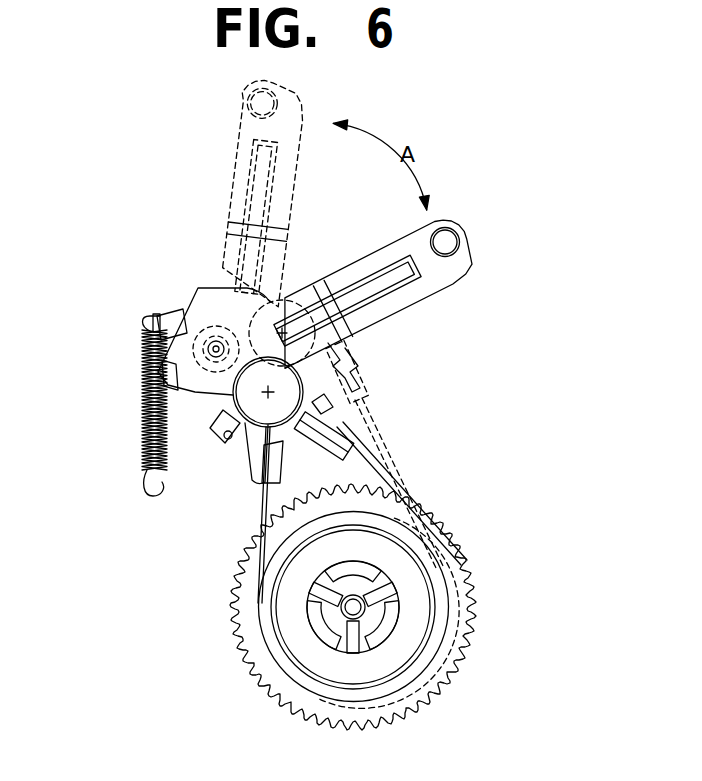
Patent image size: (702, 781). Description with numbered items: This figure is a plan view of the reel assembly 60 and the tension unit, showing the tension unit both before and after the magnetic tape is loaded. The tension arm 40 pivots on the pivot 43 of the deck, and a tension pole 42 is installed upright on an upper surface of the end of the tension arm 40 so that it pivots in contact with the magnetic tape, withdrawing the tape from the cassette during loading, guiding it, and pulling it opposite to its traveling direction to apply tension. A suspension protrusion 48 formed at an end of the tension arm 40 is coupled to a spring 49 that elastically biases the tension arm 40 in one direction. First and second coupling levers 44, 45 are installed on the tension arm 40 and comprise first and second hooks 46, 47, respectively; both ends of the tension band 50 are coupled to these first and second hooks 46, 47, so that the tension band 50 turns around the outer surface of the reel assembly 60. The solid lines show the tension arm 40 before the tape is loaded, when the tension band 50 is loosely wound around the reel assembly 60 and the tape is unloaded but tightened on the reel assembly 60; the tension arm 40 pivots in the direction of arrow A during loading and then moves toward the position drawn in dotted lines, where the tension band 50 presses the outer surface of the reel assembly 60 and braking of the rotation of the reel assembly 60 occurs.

The tension arm 40 is at (366, 258).
The tension pole 42 is at (445, 238).
The pivot 43 is at (214, 352).
The first coupling lever 44 is at (250, 458).
The second coupling lever 45 is at (352, 392).
The first hook 46 is at (258, 478).
The second hook 47 is at (344, 422).
The suspension protrusion 48 is at (156, 313).
The spring 49 is at (143, 453).
The tension band 50 is at (393, 460).
The reel assembly 60 is at (478, 540).